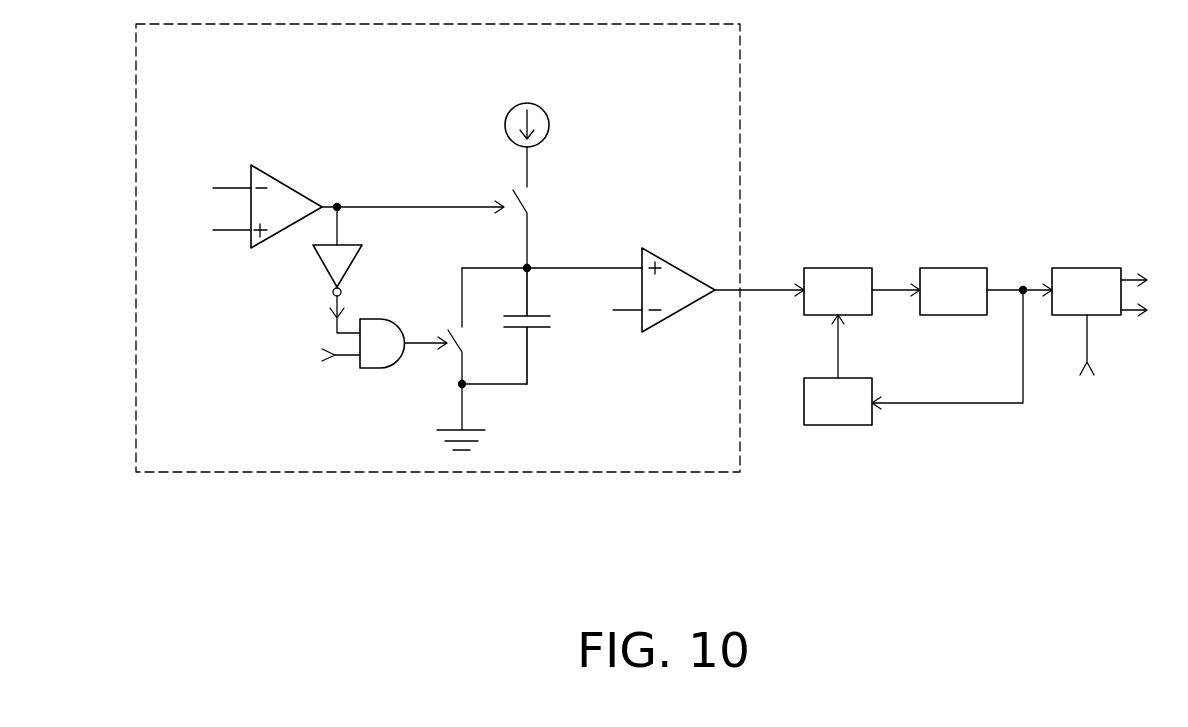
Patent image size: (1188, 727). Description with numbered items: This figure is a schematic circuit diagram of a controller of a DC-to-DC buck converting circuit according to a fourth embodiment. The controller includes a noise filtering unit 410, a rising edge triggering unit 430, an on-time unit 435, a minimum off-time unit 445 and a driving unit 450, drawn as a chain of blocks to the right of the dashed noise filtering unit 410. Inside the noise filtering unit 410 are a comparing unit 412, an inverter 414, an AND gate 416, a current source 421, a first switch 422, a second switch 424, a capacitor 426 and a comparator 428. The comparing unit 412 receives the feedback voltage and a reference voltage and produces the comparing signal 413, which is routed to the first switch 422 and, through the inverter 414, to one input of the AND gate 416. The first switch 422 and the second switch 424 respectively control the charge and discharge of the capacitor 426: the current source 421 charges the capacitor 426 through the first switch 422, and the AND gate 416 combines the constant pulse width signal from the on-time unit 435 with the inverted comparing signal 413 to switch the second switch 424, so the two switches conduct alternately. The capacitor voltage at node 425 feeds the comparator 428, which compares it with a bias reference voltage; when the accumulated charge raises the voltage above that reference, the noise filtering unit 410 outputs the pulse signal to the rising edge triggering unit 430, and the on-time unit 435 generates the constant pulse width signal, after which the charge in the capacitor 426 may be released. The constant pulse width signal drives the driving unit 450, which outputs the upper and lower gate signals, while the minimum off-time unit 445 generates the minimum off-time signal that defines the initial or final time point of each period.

The noise filtering unit 410 is at (740, 136).
The comparing unit 412 is at (290, 192).
The comparing signal 413 is at (413, 193).
The inverter 414 is at (353, 255).
The AND gate 416 is at (382, 368).
The current source 421 is at (551, 145).
The first switch 422 is at (523, 206).
The second switch 424 is at (458, 344).
The node 425 is at (552, 252).
The capacitor 426 is at (538, 329).
The comparator 428 is at (673, 303).
The rising edge triggering unit 430 is at (858, 308).
The on-time unit 435 is at (974, 308).
The off-time generator 445 is at (858, 418).
The driving unit 450 is at (1107, 308).